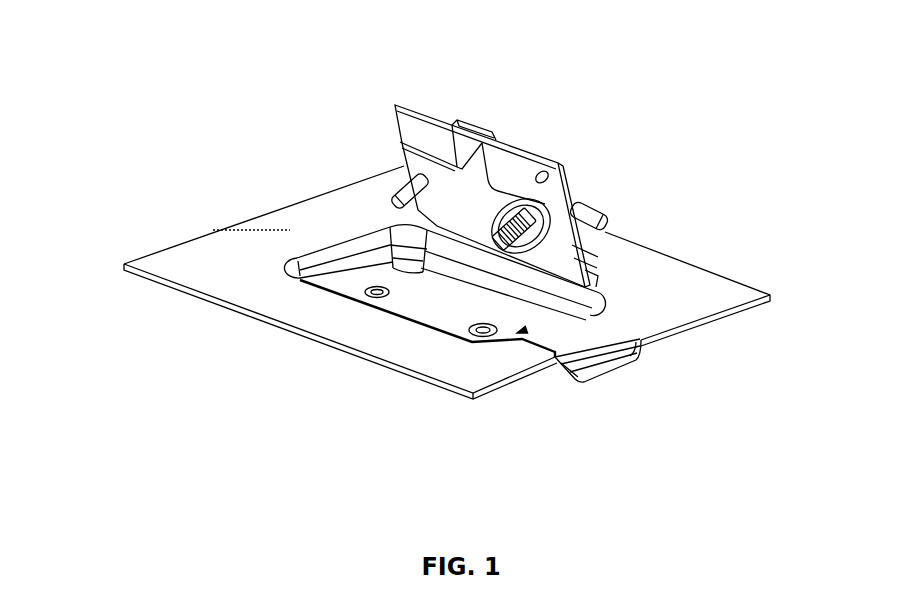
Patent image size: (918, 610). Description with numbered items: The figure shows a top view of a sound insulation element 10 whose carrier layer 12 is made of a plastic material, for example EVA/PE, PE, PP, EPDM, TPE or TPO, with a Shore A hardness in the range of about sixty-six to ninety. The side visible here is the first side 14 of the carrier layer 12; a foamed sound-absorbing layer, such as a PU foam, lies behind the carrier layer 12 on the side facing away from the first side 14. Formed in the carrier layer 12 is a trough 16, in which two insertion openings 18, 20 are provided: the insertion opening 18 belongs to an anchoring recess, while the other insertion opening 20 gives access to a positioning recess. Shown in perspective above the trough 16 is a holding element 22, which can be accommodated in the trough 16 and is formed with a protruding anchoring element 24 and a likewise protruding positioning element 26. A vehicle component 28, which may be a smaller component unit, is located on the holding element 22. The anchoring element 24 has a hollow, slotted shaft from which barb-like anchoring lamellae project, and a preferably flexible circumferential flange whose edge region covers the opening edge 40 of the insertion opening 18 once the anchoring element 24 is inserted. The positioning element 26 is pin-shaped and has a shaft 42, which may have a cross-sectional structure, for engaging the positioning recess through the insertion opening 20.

The sound insulation element 10 is at (199, 140).
The carrier layer 12 is at (500, 365).
The first side 14 is at (438, 367).
The trough 16 is at (342, 252).
The insertion opening 18 is at (425, 302).
The insertion opening 20 is at (362, 290).
The holding element 22 is at (563, 188).
The anchoring element 24 is at (480, 224).
The positioning element 26 is at (381, 187).
The vehicle component 28 is at (549, 140).
The opening edge 40 is at (527, 330).
The shaft 42 is at (397, 177).